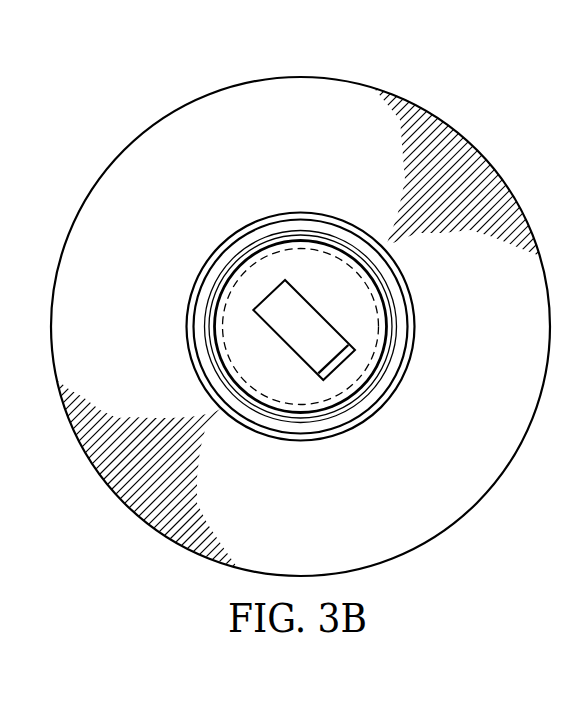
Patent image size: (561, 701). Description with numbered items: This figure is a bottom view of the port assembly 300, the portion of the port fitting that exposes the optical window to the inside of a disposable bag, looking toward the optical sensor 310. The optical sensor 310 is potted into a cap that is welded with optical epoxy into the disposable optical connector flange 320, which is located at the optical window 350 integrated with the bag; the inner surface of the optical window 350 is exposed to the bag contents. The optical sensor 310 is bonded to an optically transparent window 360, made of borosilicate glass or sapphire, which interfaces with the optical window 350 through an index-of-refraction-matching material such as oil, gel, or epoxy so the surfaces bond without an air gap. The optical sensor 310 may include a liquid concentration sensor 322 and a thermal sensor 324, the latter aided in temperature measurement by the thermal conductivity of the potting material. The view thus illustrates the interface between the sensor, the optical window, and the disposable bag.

The port assembly 300 is at (280, 350).
The optical connector flange 320 is at (302, 86).
The optical window 350 is at (232, 323).
The optically transparent window 360 is at (302, 248).
The optical sensor 310 is at (303, 416).
The thermal sensor 324 is at (287, 347).
The liquid concentration sensor 322 is at (338, 372).